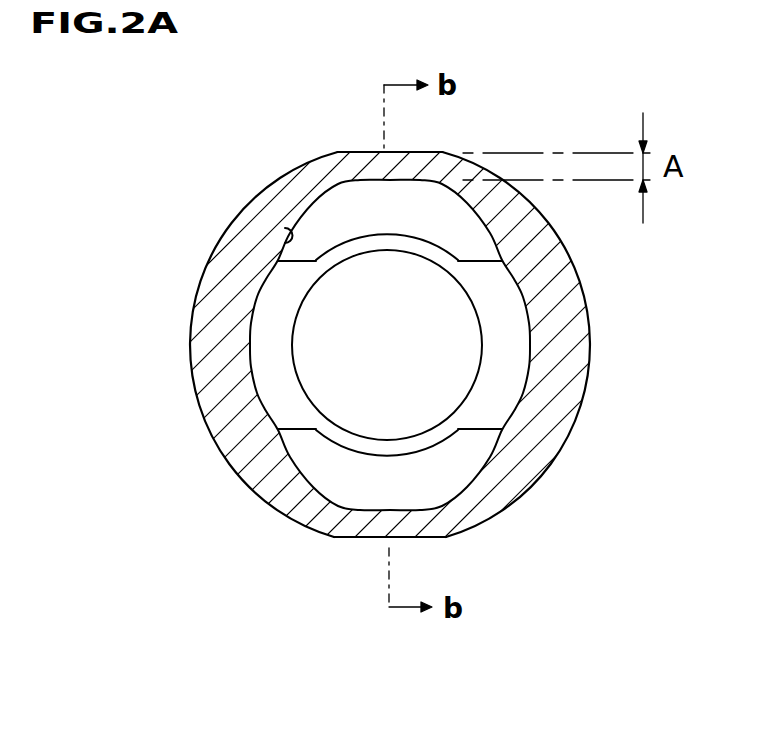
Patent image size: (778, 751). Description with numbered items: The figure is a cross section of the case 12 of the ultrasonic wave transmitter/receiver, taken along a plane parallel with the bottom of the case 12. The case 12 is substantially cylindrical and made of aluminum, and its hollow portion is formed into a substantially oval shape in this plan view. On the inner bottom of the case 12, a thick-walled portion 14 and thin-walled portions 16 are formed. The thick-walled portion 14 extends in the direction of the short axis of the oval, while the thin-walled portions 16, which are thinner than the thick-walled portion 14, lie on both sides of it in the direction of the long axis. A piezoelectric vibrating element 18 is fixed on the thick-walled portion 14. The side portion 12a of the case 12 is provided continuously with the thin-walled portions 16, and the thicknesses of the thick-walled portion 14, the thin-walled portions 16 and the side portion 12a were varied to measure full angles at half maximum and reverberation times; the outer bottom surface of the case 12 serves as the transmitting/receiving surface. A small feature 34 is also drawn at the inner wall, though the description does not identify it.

The case 12 is at (262, 490).
The side portion 12a is at (383, 152).
The thick-walled portion 14 is at (273, 370).
The thin-walled portions 16 is at (327, 210).
The piezoelectric vibrating element 18 is at (330, 318).
The notch 34 is at (283, 227).